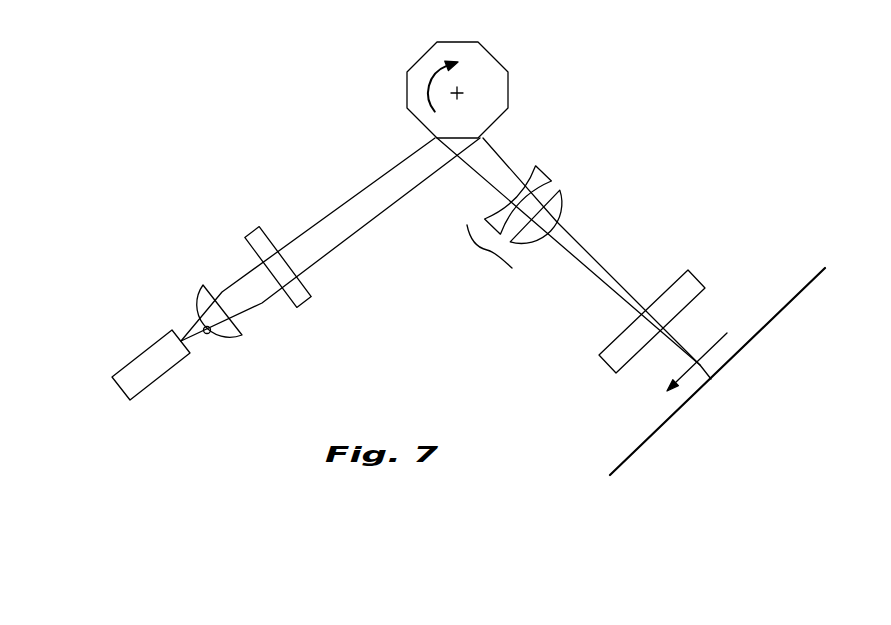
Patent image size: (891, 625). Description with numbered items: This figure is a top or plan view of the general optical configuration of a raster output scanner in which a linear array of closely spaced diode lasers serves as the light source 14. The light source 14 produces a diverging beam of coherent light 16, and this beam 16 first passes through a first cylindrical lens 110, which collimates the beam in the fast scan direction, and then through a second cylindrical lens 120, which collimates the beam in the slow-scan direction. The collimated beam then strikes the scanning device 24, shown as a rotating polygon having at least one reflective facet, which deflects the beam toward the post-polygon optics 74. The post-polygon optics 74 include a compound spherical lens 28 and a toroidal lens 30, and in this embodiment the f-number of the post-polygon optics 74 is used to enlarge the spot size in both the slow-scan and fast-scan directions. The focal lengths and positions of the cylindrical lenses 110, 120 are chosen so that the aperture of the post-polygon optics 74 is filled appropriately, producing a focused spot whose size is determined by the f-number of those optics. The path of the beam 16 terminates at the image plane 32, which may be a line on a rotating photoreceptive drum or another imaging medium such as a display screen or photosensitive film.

The light source 14 is at (152, 380).
The diverging beam of coherent light 16 is at (210, 334).
The first cylindrical lens 110 is at (247, 333).
The second cylindrical lens 120 is at (307, 305).
The scanning device 24 is at (495, 53).
The post-polygon optics 74 is at (578, 150).
The compound spherical lens 28 is at (487, 250).
The toroidal lens 30 is at (602, 362).
The image plane 32 is at (793, 300).